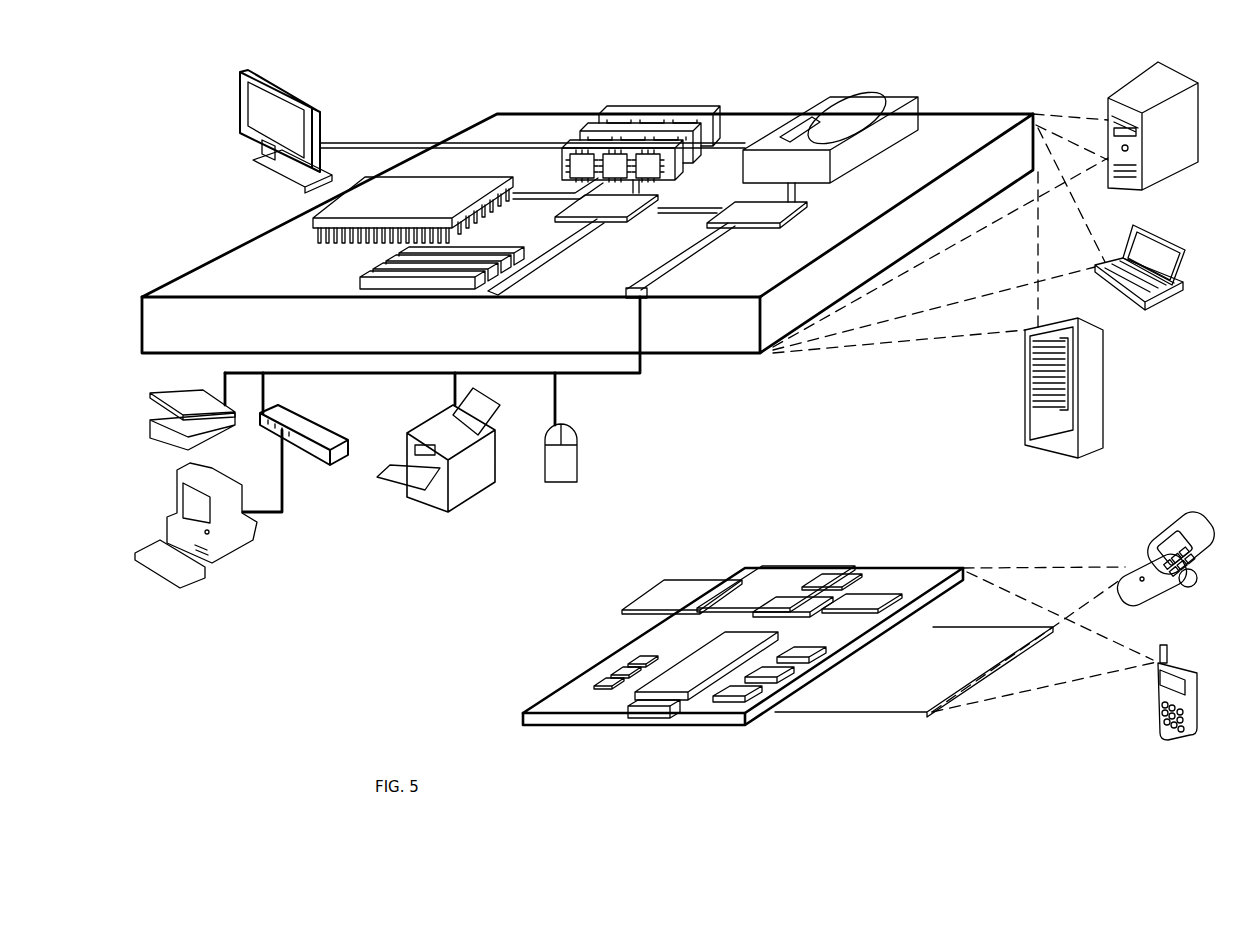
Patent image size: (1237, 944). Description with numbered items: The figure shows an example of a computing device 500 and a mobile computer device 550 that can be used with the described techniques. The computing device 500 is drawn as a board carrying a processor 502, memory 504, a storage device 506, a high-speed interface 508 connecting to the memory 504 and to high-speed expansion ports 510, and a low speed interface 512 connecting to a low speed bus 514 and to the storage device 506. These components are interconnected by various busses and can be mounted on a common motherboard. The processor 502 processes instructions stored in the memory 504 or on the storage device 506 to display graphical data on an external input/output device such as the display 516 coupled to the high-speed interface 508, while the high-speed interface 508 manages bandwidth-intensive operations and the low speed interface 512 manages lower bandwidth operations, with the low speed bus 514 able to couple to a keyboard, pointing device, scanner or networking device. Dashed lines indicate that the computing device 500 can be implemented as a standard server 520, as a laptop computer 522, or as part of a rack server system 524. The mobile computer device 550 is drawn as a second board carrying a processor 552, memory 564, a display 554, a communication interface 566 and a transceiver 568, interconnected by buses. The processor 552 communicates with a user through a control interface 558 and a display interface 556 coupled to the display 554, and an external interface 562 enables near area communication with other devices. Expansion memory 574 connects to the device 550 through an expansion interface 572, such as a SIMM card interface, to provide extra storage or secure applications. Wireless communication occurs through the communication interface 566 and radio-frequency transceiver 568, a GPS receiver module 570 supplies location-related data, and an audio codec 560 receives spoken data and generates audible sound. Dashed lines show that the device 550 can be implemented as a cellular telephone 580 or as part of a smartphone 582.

The computing device 500 is at (430, 84).
The processor 502 is at (315, 226).
The memory 504 is at (612, 112).
The storage device 506 is at (823, 96).
The high-speed interface 508 is at (583, 208).
The high-speed expansion ports 510 is at (378, 268).
The low speed interface 512 is at (757, 211).
The low speed bus 514 is at (645, 300).
The display 516 is at (240, 73).
The standard server 520 is at (1108, 100).
The laptop computer 522 is at (1133, 228).
The rack server system 524 is at (1025, 410).
The mobile computer device 550 is at (730, 538).
The processor 552 is at (686, 702).
The display 554 is at (930, 714).
The display interface 556 is at (748, 702).
The control interface 558 is at (772, 684).
The audio codec 560 is at (802, 664).
The external interface 562 is at (652, 717).
The memory 564 is at (616, 685).
The communication interface 566 is at (790, 602).
The transceiver 568 is at (862, 600).
The GPS receiver module 570 is at (834, 574).
The expansion interface 572 is at (735, 578).
The expansion memory 574 is at (663, 581).
The cellular telephone 580 is at (1180, 516).
The smartphone 582 is at (1163, 645).